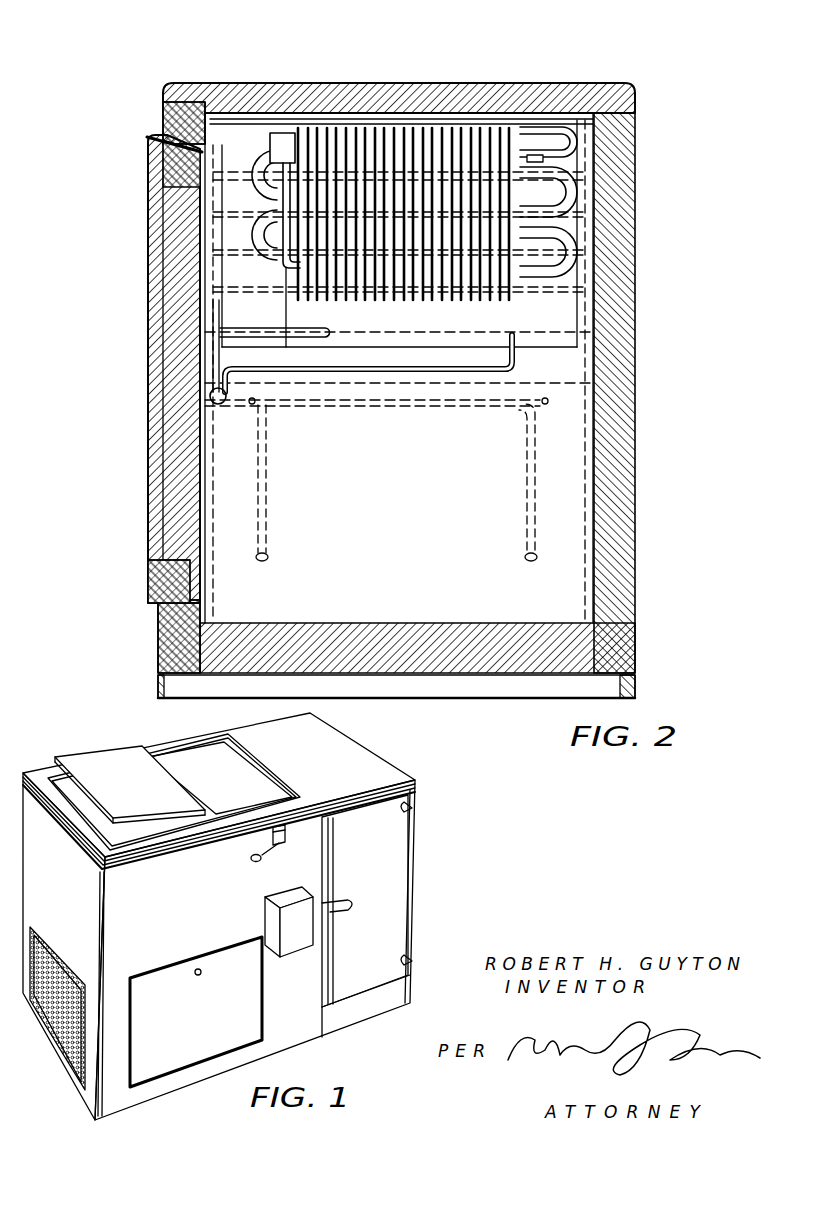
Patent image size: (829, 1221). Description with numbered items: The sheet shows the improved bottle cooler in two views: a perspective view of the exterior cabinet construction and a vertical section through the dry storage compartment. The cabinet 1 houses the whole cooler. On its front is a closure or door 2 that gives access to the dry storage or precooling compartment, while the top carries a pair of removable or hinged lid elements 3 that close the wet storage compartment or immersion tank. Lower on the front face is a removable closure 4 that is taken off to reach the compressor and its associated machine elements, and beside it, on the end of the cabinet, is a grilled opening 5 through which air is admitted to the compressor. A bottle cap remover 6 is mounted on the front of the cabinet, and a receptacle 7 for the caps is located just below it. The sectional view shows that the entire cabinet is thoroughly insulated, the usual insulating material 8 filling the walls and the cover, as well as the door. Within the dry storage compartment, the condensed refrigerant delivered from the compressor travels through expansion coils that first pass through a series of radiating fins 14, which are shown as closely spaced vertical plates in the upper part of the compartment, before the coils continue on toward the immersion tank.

In FIG. 1, the cabinet 1 is at (285, 1039).
In FIG. 2, the door 2 is at (148, 393).
In FIG. 1, the door 2 is at (378, 883).
In FIG. 1, the lid elements 3 is at (97, 772).
In FIG. 1, the removable closure 4 is at (165, 993).
In FIG. 1, the grilled opening 5 is at (58, 955).
In FIG. 1, the bottle cap remover 6 is at (265, 848).
In FIG. 1, the receptacle for the caps 7 is at (303, 938).
In FIG. 2, the insulating material 8 is at (585, 102).
In FIG. 2, the radiating fins 14 is at (513, 300).